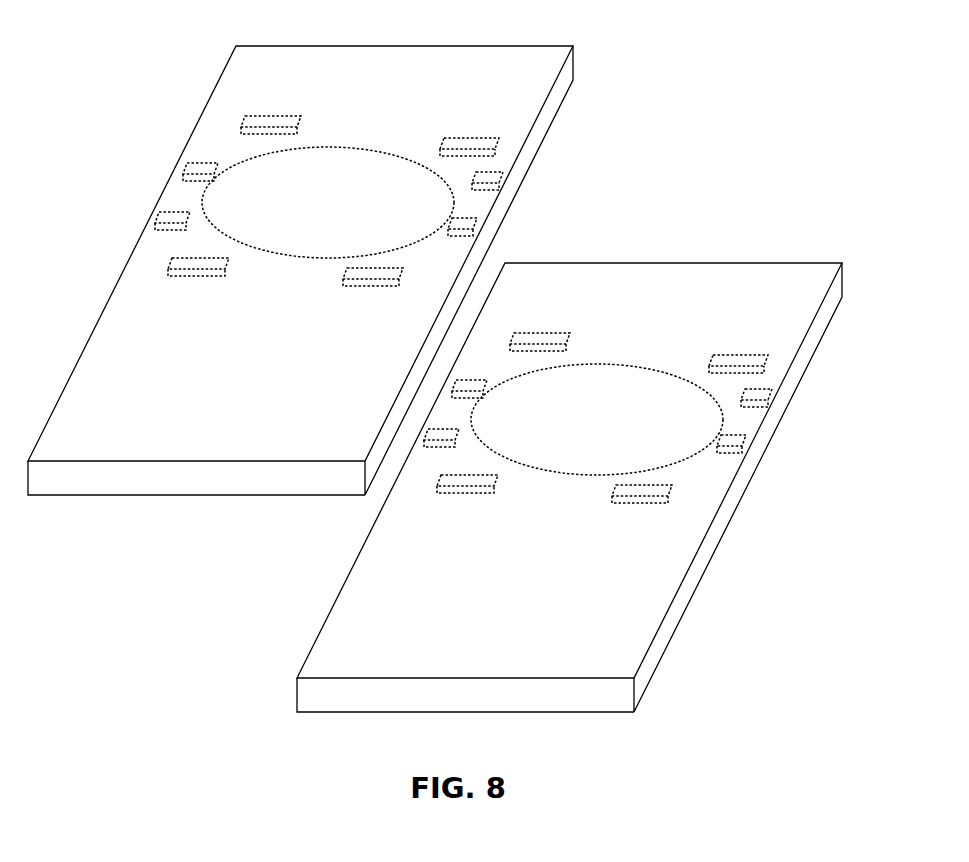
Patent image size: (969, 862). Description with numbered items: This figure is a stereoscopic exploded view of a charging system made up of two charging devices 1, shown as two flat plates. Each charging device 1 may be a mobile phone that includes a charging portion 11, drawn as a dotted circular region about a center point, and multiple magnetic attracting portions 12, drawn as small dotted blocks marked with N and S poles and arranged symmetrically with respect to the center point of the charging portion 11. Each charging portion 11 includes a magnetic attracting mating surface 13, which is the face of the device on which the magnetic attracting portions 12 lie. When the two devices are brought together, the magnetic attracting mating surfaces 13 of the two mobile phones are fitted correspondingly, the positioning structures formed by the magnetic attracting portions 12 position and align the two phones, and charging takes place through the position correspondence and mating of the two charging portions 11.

The charging device 1 is at (435, 379).
The charging portion 11 is at (362, 182).
The magnetic attracting portion 12 is at (287, 117).
The magnetic attracting mating surface 13 is at (153, 423).